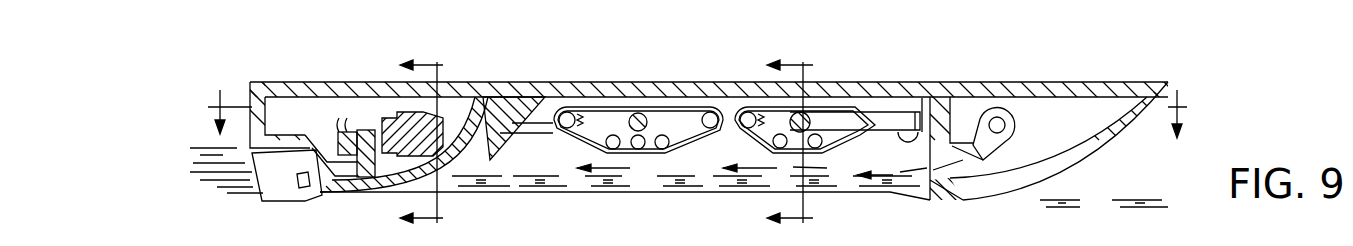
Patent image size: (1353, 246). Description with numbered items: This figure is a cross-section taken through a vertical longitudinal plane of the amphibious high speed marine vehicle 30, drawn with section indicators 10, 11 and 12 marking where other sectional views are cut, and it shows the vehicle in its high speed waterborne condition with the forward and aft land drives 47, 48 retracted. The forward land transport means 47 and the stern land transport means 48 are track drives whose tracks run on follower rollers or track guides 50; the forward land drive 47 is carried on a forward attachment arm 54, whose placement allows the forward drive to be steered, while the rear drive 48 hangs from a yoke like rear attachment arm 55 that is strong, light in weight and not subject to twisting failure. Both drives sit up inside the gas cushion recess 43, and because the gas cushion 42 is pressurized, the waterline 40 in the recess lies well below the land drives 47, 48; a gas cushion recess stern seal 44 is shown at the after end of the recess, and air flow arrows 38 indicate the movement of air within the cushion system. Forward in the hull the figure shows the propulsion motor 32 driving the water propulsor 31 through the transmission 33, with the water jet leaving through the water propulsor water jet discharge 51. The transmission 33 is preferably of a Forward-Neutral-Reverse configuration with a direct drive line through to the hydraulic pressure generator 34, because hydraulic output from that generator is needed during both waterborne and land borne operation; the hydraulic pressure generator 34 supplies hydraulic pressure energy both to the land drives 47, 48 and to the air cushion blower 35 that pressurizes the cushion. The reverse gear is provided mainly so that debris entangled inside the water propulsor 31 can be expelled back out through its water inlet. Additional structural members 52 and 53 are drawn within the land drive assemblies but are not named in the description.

The section line 10- 10 is at (699, 118).
The section line 11- 11 is at (770, 143).
The section line 12- 12 is at (403, 144).
The amphibious high speed marine vehicle 30 is at (950, 202).
The water propulsor 31 is at (300, 184).
The propulsion motor 32 is at (438, 136).
The transmission 33 is at (365, 130).
The hydraulic pressure generator 34 is at (343, 140).
The air cushion blower 35 is at (1010, 143).
The air flow arrows 38 is at (675, 168).
The waterline 40 is at (200, 155).
The gas cushion 42 is at (540, 170).
The gas cushion recess 43 is at (713, 173).
The gas cushion recess stern seal 44 is at (493, 143).
The forward land transport means 47 is at (848, 138).
The stern land transport means 48 is at (693, 143).
The follower rollers or track guides 50 is at (712, 112).
The water propulsor water jet discharge 51 is at (247, 193).
The slide bar 52 is at (840, 108).
The first belt 53 is at (640, 104).
The forward attachment arm 54 is at (915, 117).
The rear attachment arm 55 is at (545, 97).